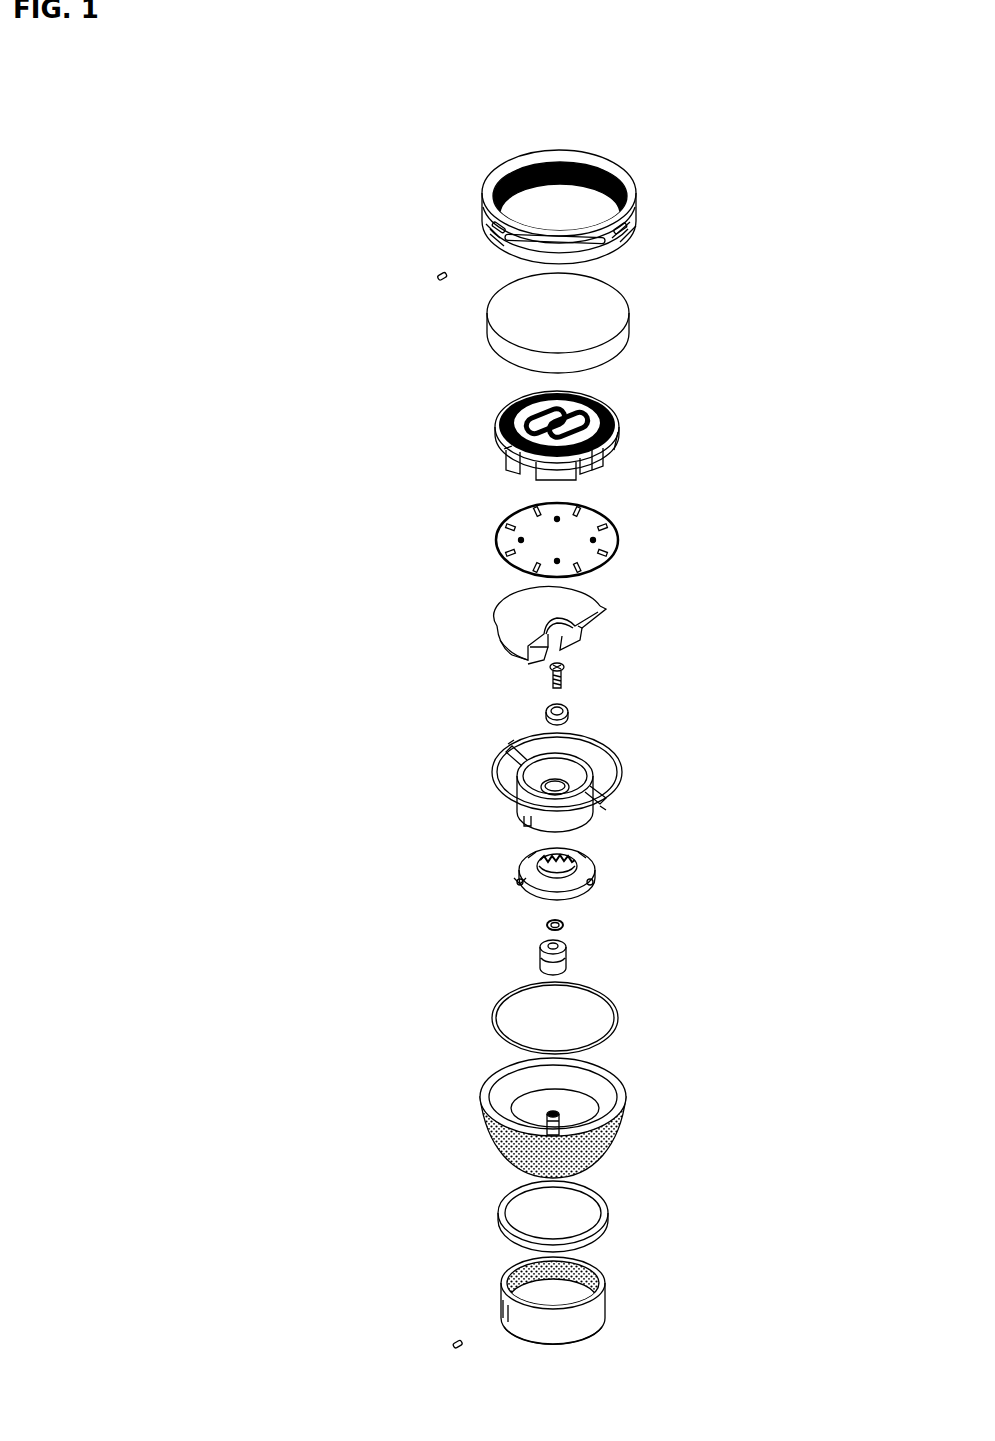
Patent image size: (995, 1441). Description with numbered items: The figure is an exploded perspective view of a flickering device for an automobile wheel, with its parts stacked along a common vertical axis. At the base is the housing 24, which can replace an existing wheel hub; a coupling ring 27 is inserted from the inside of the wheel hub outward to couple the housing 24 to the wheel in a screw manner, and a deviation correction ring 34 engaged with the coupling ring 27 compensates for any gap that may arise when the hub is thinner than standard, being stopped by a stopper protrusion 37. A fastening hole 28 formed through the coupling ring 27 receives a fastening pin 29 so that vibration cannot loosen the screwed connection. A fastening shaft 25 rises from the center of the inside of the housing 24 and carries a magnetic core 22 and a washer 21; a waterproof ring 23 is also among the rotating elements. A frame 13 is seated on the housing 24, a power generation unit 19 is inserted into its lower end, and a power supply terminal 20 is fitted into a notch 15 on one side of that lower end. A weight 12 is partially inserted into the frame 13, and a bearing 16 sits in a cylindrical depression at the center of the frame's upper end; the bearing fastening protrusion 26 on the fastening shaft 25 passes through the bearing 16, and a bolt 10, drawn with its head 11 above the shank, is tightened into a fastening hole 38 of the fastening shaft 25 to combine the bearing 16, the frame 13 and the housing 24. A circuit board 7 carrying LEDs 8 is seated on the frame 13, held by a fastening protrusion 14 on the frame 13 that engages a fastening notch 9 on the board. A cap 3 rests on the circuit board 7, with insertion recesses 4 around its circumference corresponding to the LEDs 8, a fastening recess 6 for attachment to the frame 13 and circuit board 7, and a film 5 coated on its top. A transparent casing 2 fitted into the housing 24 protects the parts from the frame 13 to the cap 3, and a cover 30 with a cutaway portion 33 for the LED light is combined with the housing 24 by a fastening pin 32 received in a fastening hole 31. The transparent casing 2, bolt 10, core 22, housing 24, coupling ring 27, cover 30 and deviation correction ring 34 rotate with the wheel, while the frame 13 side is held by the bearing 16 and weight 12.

The transparent casing 2 is at (622, 320).
The cap 3 is at (580, 437).
The insertion recesses 4 is at (512, 462).
The film 5 is at (507, 413).
The fastening recess 6 is at (603, 468).
The circuit board 7 is at (571, 544).
The LEDs 8 is at (610, 553).
The fastening notch 9 is at (518, 565).
The bolt 10 is at (560, 685).
The screw head 11 is at (563, 670).
The weight 12 is at (507, 638).
The frame 13 is at (564, 783).
The fastening protrusion 14 is at (513, 742).
The notch 15 is at (527, 820).
The bearing 16 is at (565, 717).
The power generation unit 19 is at (593, 883).
The power supply terminal 20 is at (520, 885).
The washer 21 is at (563, 925).
The magnetic core 22 is at (568, 960).
The waterproof ring 23 is at (617, 1027).
The housing 24 is at (583, 1118).
The fastening shaft 25 is at (600, 1163).
The bearing fastening protrusion 26 is at (507, 1152).
The coupling ring 27 is at (571, 1305).
The fastening hole 28 is at (513, 1313).
The fastening pin 29 is at (455, 1345).
The cover 30 is at (610, 162).
The fastening hole 31 is at (502, 245).
The fastening pin 32 is at (440, 277).
The cutaway portion 33 is at (633, 227).
The deviation correction ring 34 is at (607, 1230).
The stopper protrusion 37 is at (600, 1332).
The fastening hole 38 is at (540, 1097).